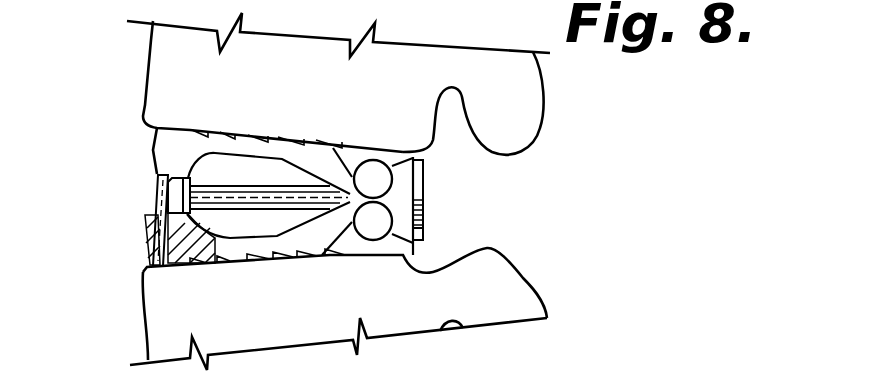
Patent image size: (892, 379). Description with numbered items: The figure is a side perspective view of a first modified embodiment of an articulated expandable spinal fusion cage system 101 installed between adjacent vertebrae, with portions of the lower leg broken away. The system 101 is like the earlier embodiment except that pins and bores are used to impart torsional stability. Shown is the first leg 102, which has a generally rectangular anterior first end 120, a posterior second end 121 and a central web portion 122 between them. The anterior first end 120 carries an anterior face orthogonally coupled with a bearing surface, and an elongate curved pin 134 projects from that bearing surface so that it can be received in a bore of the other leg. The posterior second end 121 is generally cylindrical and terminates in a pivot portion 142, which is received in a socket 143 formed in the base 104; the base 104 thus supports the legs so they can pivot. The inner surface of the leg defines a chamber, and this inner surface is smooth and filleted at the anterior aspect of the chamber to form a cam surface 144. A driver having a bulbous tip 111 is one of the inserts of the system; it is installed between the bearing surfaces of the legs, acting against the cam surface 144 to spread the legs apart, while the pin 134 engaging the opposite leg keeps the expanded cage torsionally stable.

The articulated expandable spinal fusion cage system 101 is at (83, 127).
The anterior first end 120 is at (150, 135).
The first leg 102 is at (185, 128).
The central web portion 122 is at (242, 130).
The posterior second end 121 is at (370, 146).
The pivot portion 142 is at (380, 169).
The socket 143 is at (420, 165).
The base 104 is at (405, 205).
The cam surface 144 is at (214, 159).
The elongate curved pin 134 is at (155, 183).
The bulbous tip 111 is at (155, 187).